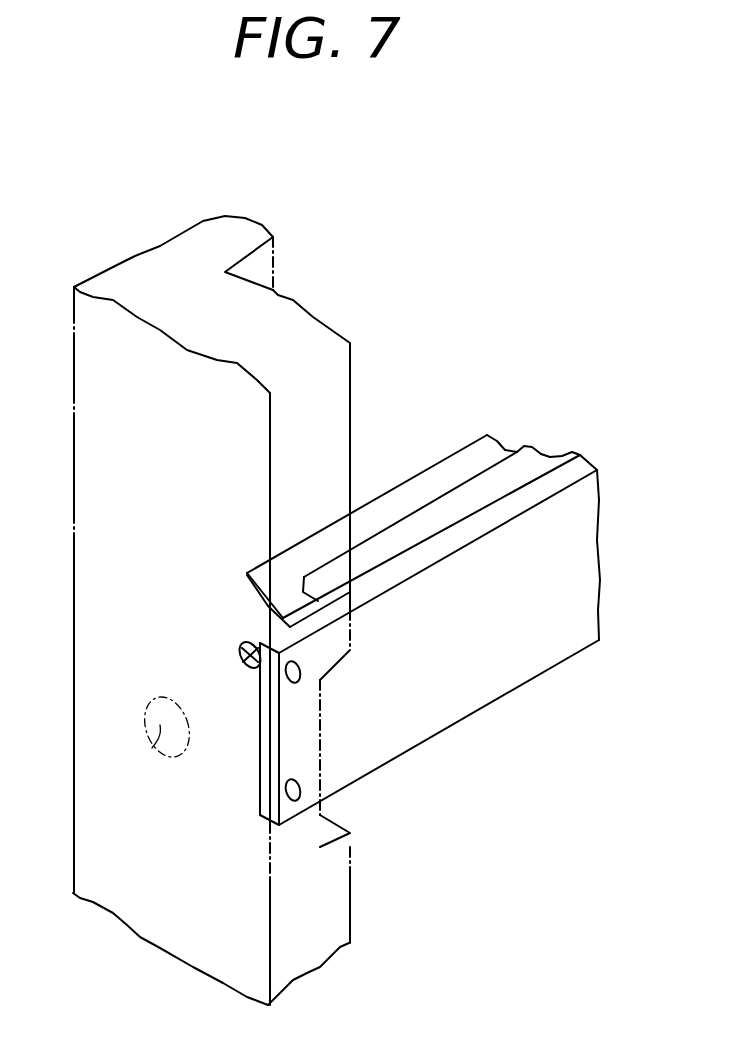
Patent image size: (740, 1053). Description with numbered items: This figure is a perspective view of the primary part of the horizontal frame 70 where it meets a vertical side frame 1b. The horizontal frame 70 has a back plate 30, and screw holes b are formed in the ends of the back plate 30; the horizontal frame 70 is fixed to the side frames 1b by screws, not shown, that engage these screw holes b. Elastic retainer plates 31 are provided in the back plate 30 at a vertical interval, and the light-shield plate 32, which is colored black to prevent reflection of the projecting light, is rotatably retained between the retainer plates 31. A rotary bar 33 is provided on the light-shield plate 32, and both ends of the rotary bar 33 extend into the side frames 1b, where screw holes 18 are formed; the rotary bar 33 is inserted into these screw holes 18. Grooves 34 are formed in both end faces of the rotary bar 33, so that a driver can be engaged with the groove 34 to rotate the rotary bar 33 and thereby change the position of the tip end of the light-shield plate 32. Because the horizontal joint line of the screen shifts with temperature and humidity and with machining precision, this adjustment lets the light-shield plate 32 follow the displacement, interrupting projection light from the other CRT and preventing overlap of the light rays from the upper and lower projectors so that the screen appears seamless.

The side frame 1b is at (350, 377).
The screw hole 18 is at (147, 758).
The back plate 30 is at (563, 640).
The elastic retainer plate 31 is at (514, 470).
The light-shield plate 32 is at (428, 480).
The rotary bar 33 is at (240, 652).
The groove 34 is at (260, 680).
The horizontal frame 70 is at (378, 587).
The screw hole b is at (300, 677).